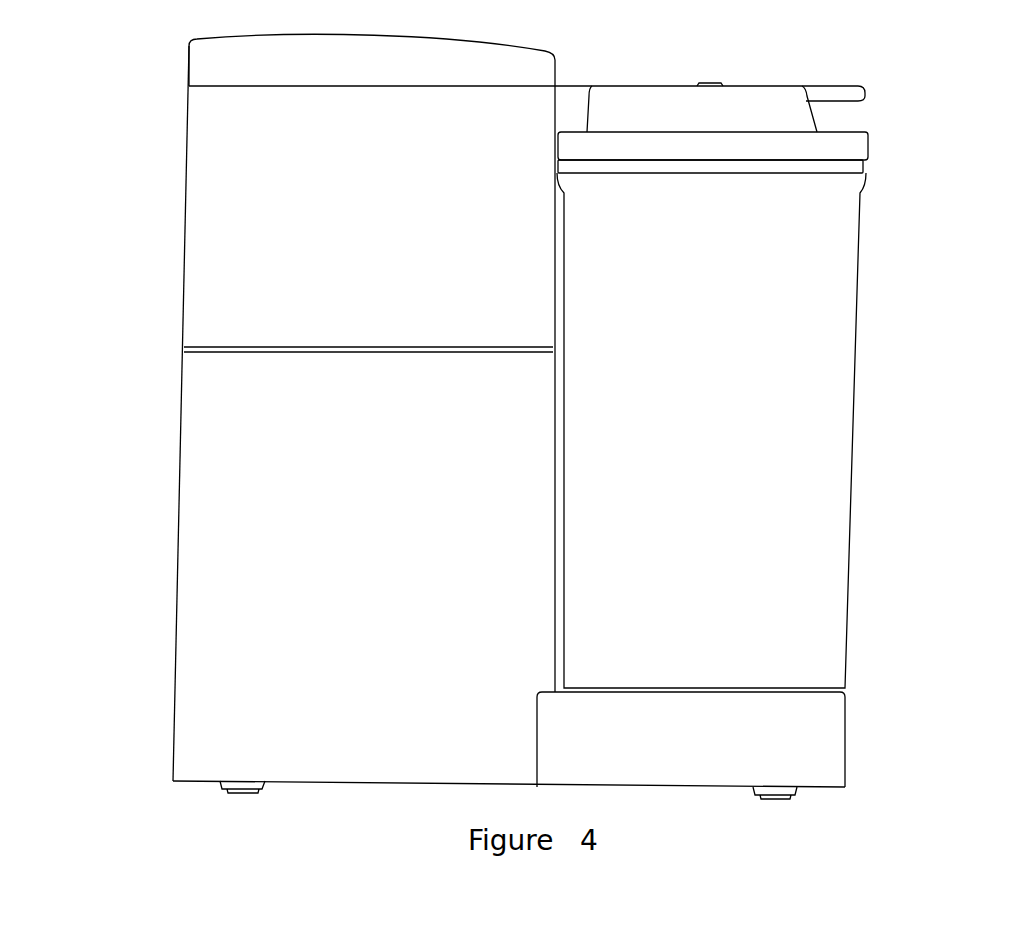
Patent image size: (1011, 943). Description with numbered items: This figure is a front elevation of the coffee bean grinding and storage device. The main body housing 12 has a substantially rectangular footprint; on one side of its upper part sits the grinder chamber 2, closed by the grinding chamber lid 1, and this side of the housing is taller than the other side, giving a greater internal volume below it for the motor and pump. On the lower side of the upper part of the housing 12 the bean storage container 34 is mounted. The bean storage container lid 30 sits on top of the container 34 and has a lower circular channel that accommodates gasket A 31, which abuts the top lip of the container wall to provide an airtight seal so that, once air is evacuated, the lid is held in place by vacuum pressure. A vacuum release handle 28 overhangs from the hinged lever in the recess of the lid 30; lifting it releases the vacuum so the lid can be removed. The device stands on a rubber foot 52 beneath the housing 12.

The grinding chamber lid 1 is at (220, 67).
The grinder chamber 2 is at (237, 225).
The main body housing 12 is at (238, 620).
The vacuum release handle 28 is at (845, 95).
The bean storage container lid 30 is at (840, 148).
The gasket A 31 is at (863, 167).
The bean storage container 34 is at (803, 457).
The rubber foot 52 is at (800, 789).